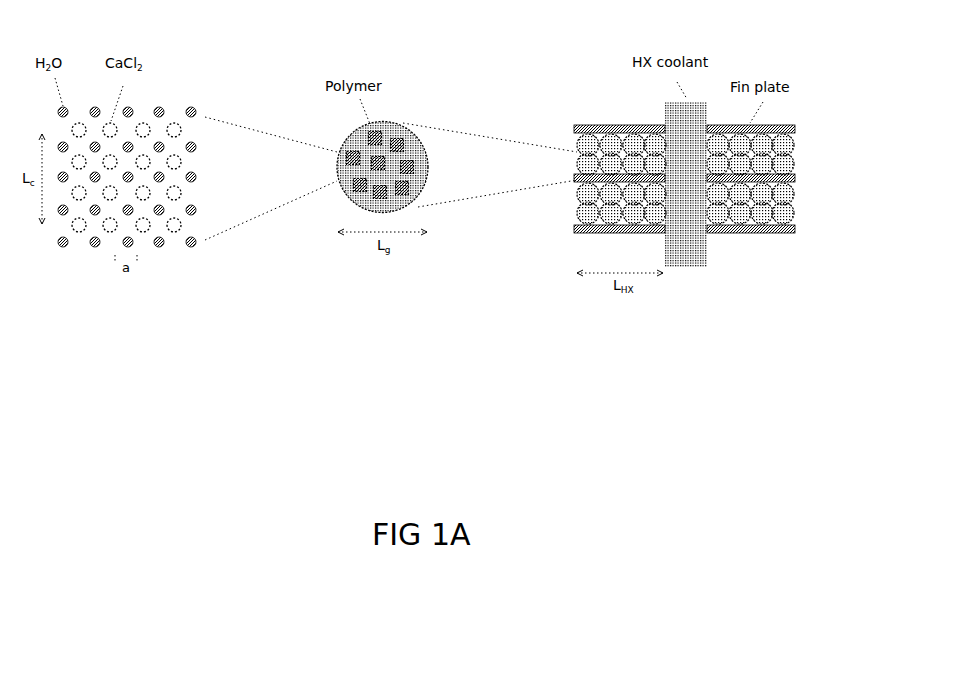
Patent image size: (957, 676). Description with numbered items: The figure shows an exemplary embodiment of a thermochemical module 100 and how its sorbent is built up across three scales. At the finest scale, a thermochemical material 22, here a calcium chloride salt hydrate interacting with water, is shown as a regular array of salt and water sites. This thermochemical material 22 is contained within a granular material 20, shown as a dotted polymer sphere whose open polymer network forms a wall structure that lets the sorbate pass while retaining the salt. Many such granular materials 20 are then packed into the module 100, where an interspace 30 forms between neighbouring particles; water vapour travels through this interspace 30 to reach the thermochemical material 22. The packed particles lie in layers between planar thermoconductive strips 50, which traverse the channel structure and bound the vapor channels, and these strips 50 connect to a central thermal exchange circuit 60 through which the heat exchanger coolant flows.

The thermochemical material 22 is at (99, 289).
The granular material 20 is at (565, 228).
The interspace 30 is at (651, 276).
The strips 50 is at (663, 138).
The thermal exchange circuit 60 is at (731, 217).
The thermochemical module 100 is at (653, 207).